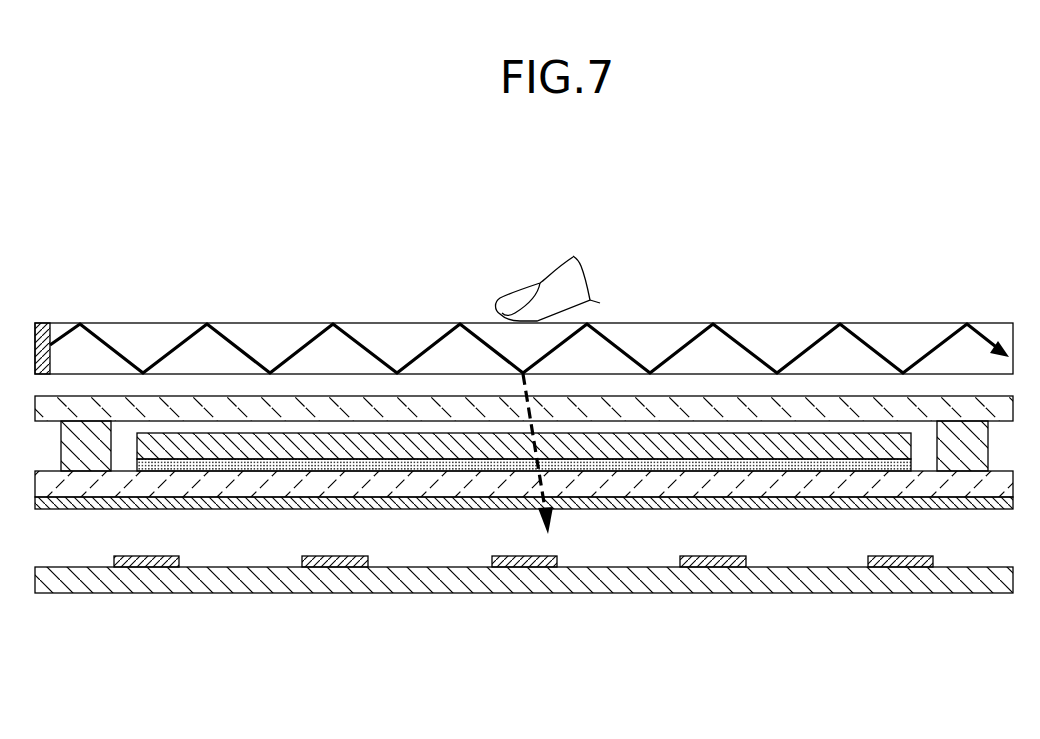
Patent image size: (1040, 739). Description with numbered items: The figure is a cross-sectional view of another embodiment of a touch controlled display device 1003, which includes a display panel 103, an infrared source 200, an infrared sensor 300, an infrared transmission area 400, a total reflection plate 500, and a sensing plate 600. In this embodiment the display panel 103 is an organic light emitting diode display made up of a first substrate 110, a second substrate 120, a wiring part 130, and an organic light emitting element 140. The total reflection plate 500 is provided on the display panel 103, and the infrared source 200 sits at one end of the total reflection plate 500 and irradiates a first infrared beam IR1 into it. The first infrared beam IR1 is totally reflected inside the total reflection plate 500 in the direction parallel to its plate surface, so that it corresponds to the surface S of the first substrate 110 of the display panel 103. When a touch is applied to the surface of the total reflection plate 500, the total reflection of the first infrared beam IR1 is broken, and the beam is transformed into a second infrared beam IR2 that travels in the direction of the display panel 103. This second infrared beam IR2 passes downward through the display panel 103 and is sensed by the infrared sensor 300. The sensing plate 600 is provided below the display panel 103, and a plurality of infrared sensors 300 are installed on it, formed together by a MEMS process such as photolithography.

The touch controlled display device 1003 is at (477, 206).
The infrared source 200 is at (48, 322).
The total reflection plate 500 is at (778, 322).
The first infrared beam IR1 is at (242, 349).
The second infrared beam IR2 is at (545, 488).
The display panel 103 is at (180, 652).
The second substrate 120 is at (193, 413).
The first substrate 110 is at (260, 485).
The wiring part 130 is at (330, 464).
The organic light emitting element 140 is at (385, 447).
The surface S is at (790, 397).
The infrared transmission area 400 is at (88, 508).
The infrared sensor 300 is at (710, 562).
The sensing plate 600 is at (883, 580).